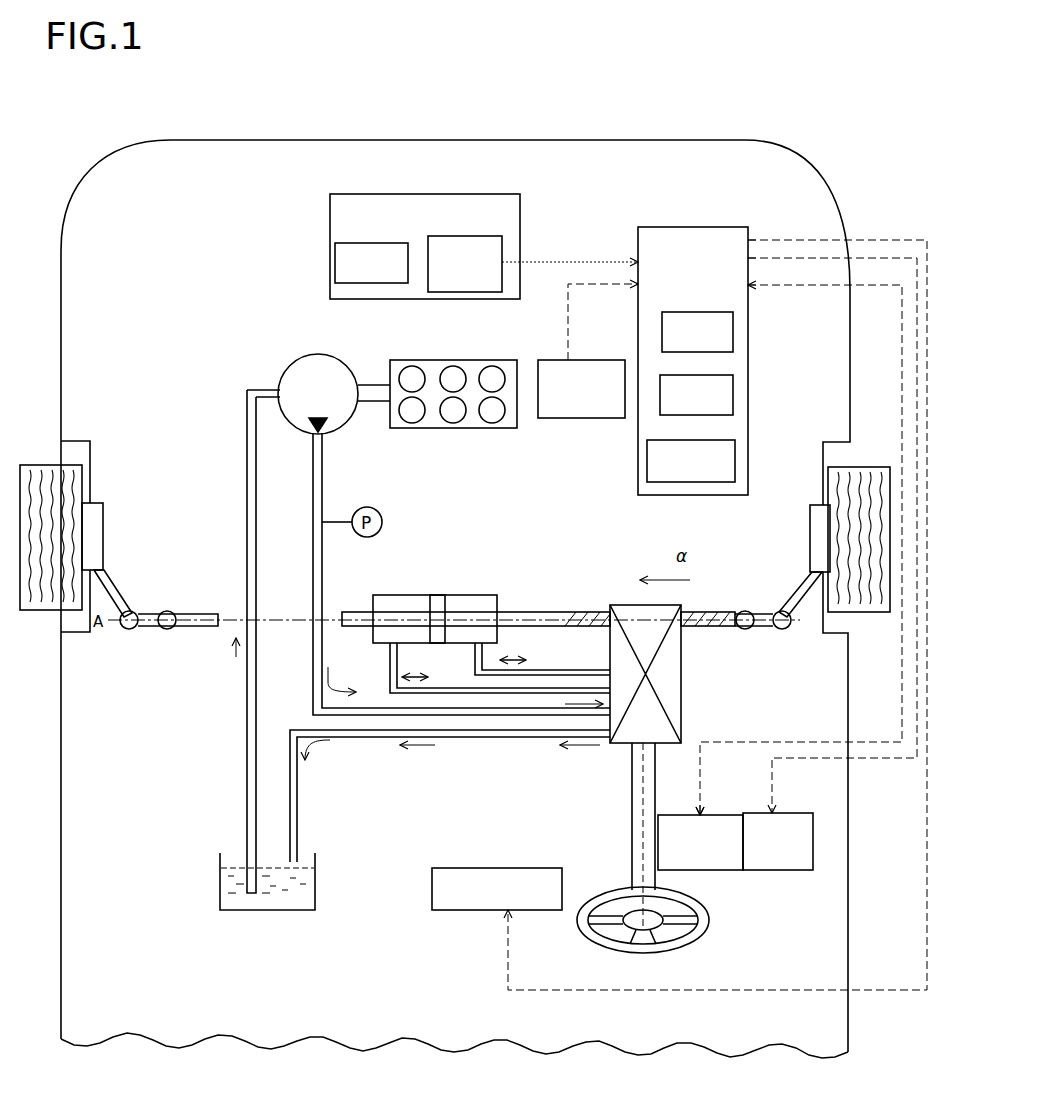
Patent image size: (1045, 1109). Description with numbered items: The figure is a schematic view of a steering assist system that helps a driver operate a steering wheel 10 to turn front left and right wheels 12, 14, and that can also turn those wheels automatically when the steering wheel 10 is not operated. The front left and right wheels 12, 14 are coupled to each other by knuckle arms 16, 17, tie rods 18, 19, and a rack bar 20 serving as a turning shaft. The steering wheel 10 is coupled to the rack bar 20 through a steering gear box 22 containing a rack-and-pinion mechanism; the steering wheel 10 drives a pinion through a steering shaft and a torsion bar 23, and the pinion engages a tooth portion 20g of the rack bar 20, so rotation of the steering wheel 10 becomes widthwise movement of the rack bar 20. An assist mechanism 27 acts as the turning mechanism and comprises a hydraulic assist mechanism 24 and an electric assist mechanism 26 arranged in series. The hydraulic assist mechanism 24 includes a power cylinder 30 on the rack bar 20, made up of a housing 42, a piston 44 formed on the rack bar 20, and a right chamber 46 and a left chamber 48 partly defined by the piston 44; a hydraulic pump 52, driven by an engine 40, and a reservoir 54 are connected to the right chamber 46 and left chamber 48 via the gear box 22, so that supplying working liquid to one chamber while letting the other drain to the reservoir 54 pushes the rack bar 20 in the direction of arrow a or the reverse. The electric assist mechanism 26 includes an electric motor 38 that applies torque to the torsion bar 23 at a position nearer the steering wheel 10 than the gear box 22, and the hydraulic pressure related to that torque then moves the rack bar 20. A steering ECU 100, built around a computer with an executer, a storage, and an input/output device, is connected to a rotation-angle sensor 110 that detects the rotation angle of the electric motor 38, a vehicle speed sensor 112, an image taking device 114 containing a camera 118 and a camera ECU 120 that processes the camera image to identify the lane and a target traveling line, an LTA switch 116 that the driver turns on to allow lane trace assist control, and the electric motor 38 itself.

The steering wheel 10 is at (642, 953).
The front left wheel 12 is at (36, 464).
The front right wheel 14 is at (856, 466).
The knuckle arm 16 is at (111, 592).
The knuckle arm 17 is at (799, 612).
The tie rod 18 is at (150, 628).
The tie rod 19 is at (762, 629).
The rack bar 20 is at (547, 608).
The tooth portion 20g is at (713, 612).
The steering gear box 22 is at (674, 693).
The torsion bar 23 is at (630, 807).
The hydraulic assist mechanism 24 is at (497, 752).
The electric assist mechanism 26 is at (722, 889).
The assist mechanism 27 is at (567, 768).
The power cylinder 30 is at (433, 650).
The electric motor 38 is at (726, 812).
The engine 40 is at (468, 365).
The housing 42 is at (462, 595).
The piston 44 is at (437, 597).
The right chamber 46 is at (482, 601).
The left chamber 48 is at (385, 598).
The hydraulic pump 52 is at (330, 362).
The reservoir 54 is at (222, 893).
The steering ECU 100 is at (657, 240).
The rotation-angle sensor 110 is at (813, 843).
The vehicle speed sensor 112 is at (594, 420).
The image taking device 114 is at (418, 234).
The LTA switch 116 is at (470, 910).
The camera 118 is at (335, 264).
The camera ECU 120 is at (502, 244).